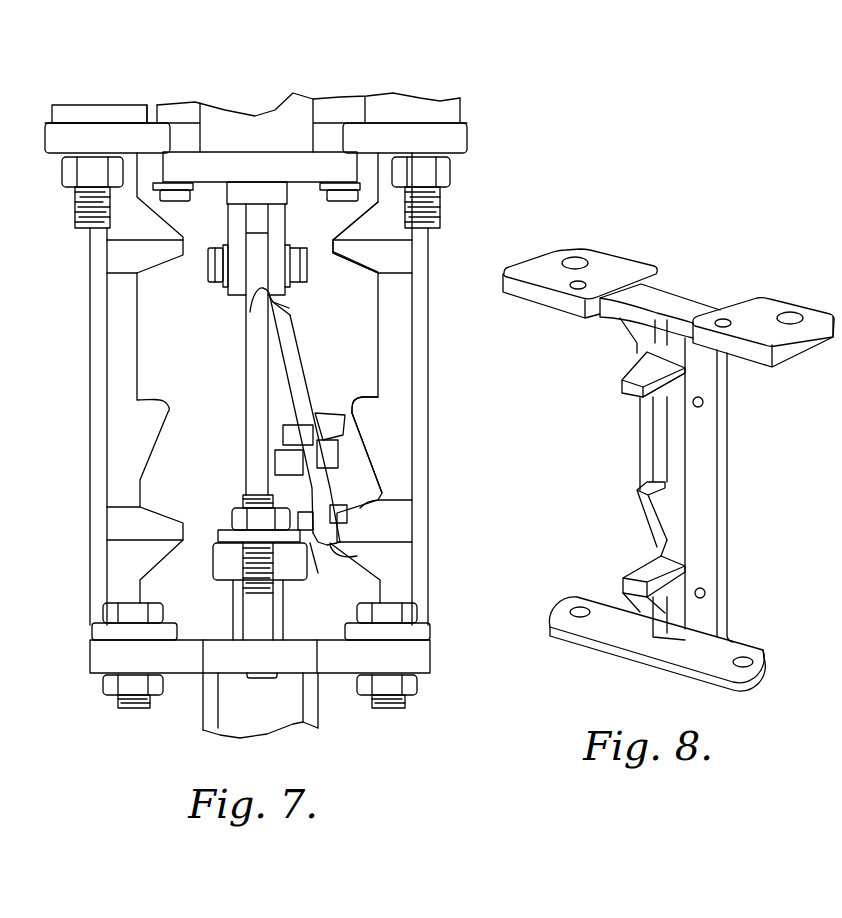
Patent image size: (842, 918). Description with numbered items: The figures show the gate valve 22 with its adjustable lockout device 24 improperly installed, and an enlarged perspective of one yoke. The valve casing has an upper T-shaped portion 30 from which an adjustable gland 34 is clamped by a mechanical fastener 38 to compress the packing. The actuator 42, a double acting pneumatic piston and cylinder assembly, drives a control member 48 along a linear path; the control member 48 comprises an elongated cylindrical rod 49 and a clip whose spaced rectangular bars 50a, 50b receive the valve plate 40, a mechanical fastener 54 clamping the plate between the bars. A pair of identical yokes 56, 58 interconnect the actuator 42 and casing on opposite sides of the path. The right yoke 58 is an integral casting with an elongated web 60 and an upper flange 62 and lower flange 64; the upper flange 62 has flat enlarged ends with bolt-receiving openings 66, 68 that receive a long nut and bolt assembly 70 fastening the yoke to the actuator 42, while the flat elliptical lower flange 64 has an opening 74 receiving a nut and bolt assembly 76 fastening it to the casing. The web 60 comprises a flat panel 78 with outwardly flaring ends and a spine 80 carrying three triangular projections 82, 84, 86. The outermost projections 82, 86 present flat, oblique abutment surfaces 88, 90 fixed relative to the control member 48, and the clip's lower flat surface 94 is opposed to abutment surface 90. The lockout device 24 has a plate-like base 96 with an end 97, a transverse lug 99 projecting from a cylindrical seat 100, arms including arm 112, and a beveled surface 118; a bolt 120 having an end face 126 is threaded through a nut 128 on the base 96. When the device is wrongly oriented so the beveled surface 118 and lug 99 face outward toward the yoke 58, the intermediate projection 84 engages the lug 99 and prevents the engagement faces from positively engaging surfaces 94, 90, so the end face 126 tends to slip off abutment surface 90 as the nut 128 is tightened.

In FIG. 7, the gate valve 22 is at (203, 721).
In FIG. 7, the adjustable lockout device 24 is at (304, 442).
In FIG. 7, the upper T-shaped portion 30 is at (420, 666).
In FIG. 7, the adjustable gland 34 is at (238, 602).
In FIG. 7, the mechanical fastener 38 is at (231, 514).
In FIG. 7, the valve plate 40 is at (252, 358).
In FIG. 7, the actuator 42 is at (100, 107).
In FIG. 7, the control member 48 is at (288, 206).
In FIG. 7, the cylindrical rod 49 is at (228, 199).
In FIG. 7, the rectangular-shaped bar 50a is at (235, 289).
In FIG. 7, the rectangular-shaped bar 50b is at (288, 238).
In FIG. 7, the mechanical fastener 54 is at (210, 269).
In FIG. 7, the left yoke 56 is at (90, 340).
In FIG. 7, the right yoke 58 is at (400, 389).
In FIG. 8, the right yoke 58 is at (671, 457).
In FIG. 7, the web 60 is at (422, 321).
In FIG. 8, the web 60 is at (723, 489).
In FIG. 7, the upper flange 62 is at (463, 137).
In FIG. 8, the upper flange 62 is at (607, 270).
In FIG. 7, the lower flange 64 is at (420, 636).
In FIG. 8, the lower flange 64 is at (663, 635).
In FIG. 8, the bolt-receiving opening 66 is at (572, 257).
In FIG. 8, the bolt-receiving opening 68 is at (793, 313).
In FIG. 7, the nut and bolt assembly 70 is at (450, 171).
In FIG. 8, the bolt-receiving opening 74 is at (745, 661).
In FIG. 7, the nut and bolt assembly 76 is at (404, 700).
In FIG. 8, the nut and bolt assembly 76 is at (578, 612).
In FIG. 8, the flat panel 78 is at (713, 429).
In FIG. 8, the spine 80 is at (620, 479).
In FIG. 7, the projection 82 is at (388, 254).
In FIG. 8, the projection 82 is at (620, 385).
In FIG. 7, the intermediate projection 84 is at (370, 403).
In FIG. 8, the intermediate projection 84 is at (647, 502).
In FIG. 7, the projection 86 is at (373, 527).
In FIG. 8, the projection 86 is at (630, 583).
In FIG. 7, the abutment surface 88 is at (353, 263).
In FIG. 8, the abutment surface 88 is at (632, 397).
In FIG. 7, the abutment surface 90 is at (380, 503).
In FIG. 8, the abutment surface 90 is at (642, 572).
In FIG. 7, the second flat surface 94 is at (276, 296).
In FIG. 7, the plate-like base 96 is at (290, 345).
In FIG. 7, the end 97 is at (250, 312).
In FIG. 7, the transverse lug 99 is at (350, 417).
In FIG. 7, the cylindrical seat 100 is at (281, 428).
In FIG. 7, the arm 112 is at (356, 556).
In FIG. 7, the beveled surface 118 is at (290, 308).
In FIG. 7, the bolt 120 is at (330, 480).
In FIG. 7, the end face 126 is at (331, 571).
In FIG. 7, the nut 128 is at (278, 462).